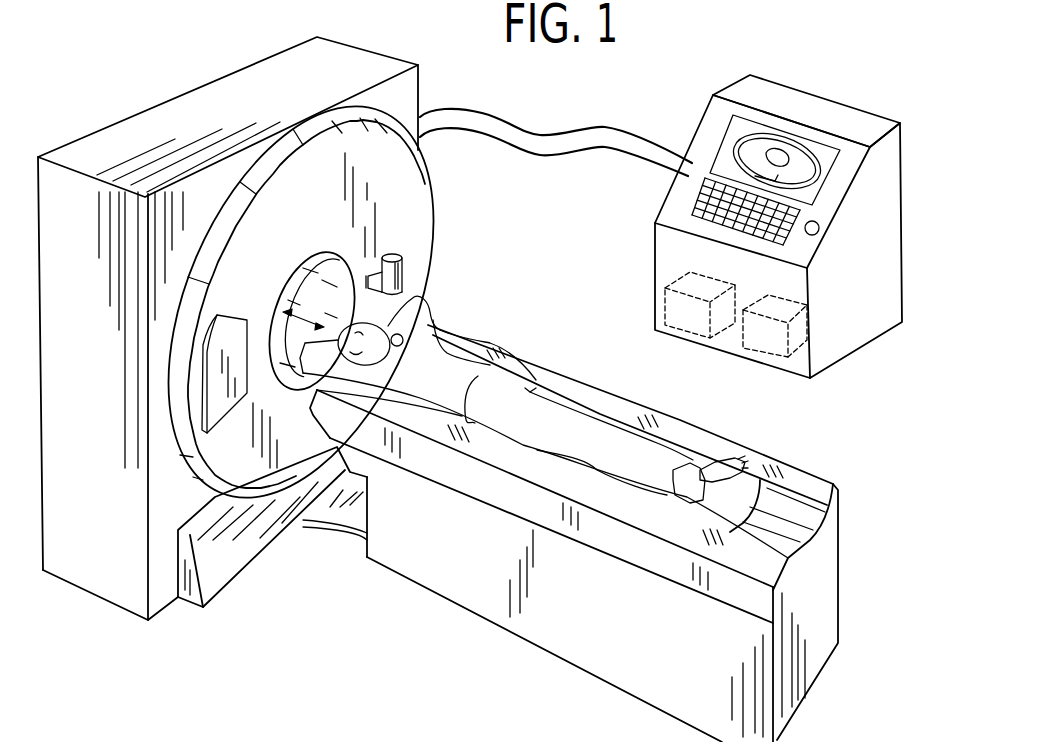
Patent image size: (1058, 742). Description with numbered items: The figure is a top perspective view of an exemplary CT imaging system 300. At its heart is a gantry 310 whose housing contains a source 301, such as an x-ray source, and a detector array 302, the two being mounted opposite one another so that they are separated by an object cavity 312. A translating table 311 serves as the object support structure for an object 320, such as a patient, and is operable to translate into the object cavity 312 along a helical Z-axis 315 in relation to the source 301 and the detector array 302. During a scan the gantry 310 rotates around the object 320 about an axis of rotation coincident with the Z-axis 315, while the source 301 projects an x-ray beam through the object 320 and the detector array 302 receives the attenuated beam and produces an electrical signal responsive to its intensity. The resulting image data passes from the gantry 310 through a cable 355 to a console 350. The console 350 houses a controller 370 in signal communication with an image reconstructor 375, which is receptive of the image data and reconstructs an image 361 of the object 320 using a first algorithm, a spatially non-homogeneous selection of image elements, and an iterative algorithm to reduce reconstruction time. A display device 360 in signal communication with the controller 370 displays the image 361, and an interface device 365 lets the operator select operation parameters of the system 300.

The imaging system 300 is at (377, 44).
The source 301 is at (403, 272).
The detector array 302 is at (213, 390).
The gantry 310 is at (400, 181).
The translating table 311 is at (818, 480).
The object cavity 312 is at (337, 252).
The Z-axis 315 is at (303, 319).
The object 320 is at (443, 360).
The console 350 is at (754, 234).
The cable 355 is at (542, 153).
The display device 360 is at (788, 160).
The image 361 is at (828, 170).
The interface device 365 is at (690, 213).
The controller 370 is at (687, 333).
The image reconstructor 375 is at (763, 355).